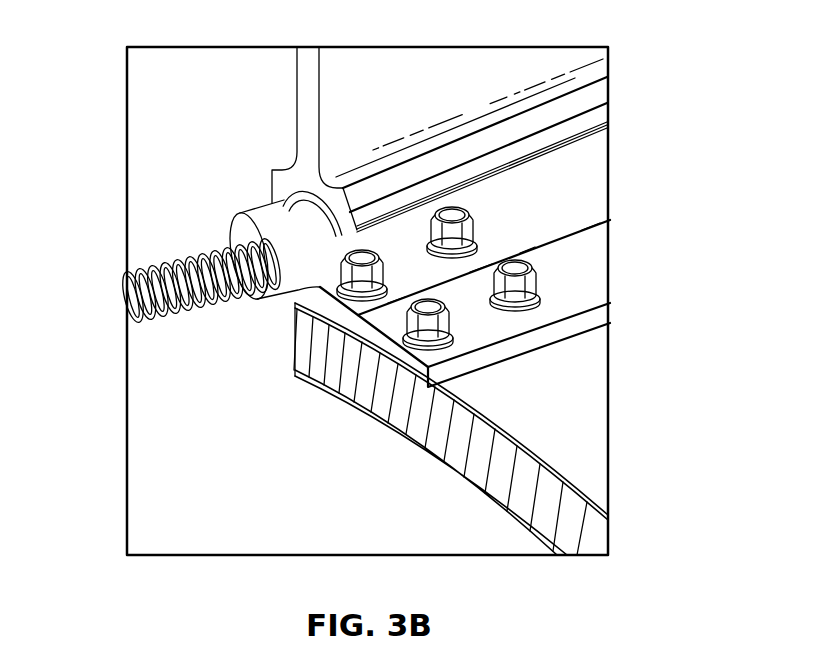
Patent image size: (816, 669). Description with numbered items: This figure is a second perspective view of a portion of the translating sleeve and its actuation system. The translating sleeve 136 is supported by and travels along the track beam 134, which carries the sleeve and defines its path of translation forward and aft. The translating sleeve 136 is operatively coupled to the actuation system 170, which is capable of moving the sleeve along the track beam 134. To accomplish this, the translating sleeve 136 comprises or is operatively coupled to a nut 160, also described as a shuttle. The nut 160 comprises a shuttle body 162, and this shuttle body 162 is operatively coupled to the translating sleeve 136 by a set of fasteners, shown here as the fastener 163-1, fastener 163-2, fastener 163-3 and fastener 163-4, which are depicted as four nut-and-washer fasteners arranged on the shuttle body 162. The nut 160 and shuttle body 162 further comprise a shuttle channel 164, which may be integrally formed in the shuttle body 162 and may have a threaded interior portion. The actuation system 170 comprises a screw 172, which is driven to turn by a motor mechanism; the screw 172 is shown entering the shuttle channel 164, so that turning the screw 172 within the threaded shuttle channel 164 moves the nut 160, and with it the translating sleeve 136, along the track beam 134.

The track beam 134 is at (414, 120).
The nut 160 is at (540, 175).
The shuttle body 162 is at (578, 278).
The fastener 163-1 is at (453, 212).
The fastener 163-2 is at (365, 249).
The fastener 163-3 is at (430, 302).
The fastener 163-4 is at (518, 266).
The shuttle channel 164 is at (253, 208).
The actuation system 170 is at (162, 255).
The screw 172 is at (171, 339).
The translating sleeve 136 is at (373, 425).